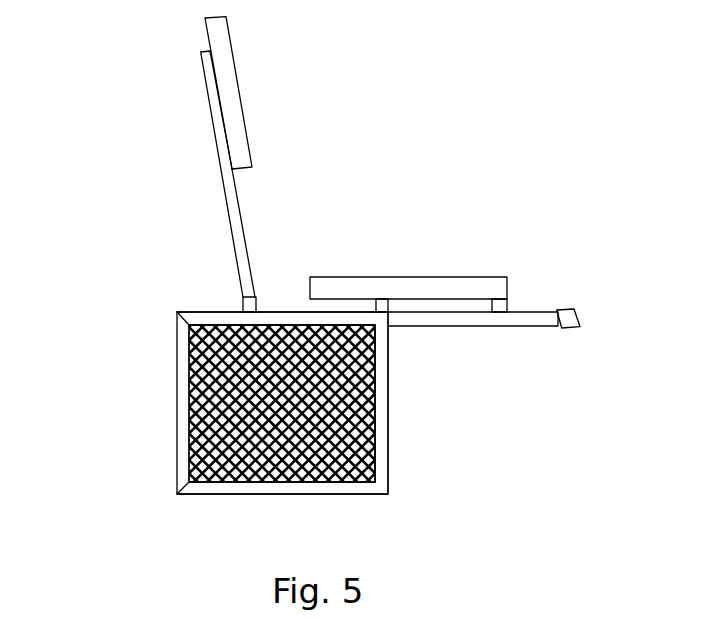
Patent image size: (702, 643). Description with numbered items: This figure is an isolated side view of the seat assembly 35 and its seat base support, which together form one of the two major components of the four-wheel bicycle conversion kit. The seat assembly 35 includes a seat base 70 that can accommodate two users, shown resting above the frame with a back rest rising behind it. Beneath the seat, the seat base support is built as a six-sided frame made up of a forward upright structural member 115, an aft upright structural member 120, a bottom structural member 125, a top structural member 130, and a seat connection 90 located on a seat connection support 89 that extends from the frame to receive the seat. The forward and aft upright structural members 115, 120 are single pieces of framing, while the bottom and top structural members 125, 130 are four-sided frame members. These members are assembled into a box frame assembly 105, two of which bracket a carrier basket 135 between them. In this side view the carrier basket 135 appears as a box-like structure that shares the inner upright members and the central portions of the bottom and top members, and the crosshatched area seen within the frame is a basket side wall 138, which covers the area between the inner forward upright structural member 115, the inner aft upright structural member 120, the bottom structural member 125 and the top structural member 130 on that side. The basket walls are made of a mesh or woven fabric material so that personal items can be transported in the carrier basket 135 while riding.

The seat assembly 35 is at (321, 153).
The seat base 70 is at (439, 277).
The seat connection support 89 is at (458, 327).
The seat connection 90 is at (570, 328).
The box frame assembly 105 is at (358, 477).
The forward upright structural member 115 is at (390, 392).
The aft upright structural member 120 is at (177, 425).
The bottom structural member 125 is at (222, 494).
The top structural member 130 is at (205, 312).
The carrier basket 135 is at (208, 371).
The basket side wall 138 is at (370, 425).